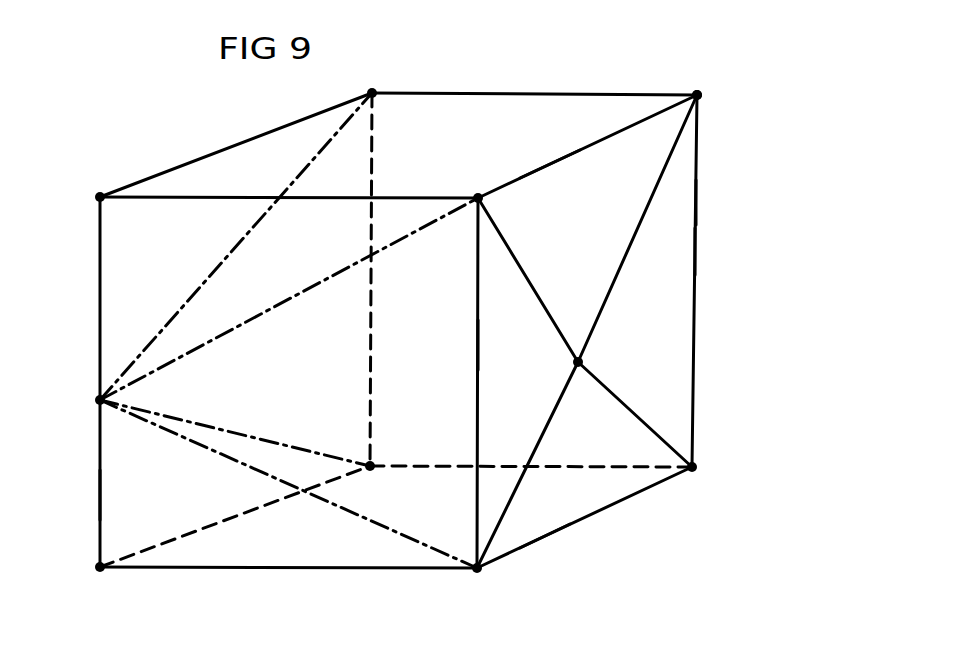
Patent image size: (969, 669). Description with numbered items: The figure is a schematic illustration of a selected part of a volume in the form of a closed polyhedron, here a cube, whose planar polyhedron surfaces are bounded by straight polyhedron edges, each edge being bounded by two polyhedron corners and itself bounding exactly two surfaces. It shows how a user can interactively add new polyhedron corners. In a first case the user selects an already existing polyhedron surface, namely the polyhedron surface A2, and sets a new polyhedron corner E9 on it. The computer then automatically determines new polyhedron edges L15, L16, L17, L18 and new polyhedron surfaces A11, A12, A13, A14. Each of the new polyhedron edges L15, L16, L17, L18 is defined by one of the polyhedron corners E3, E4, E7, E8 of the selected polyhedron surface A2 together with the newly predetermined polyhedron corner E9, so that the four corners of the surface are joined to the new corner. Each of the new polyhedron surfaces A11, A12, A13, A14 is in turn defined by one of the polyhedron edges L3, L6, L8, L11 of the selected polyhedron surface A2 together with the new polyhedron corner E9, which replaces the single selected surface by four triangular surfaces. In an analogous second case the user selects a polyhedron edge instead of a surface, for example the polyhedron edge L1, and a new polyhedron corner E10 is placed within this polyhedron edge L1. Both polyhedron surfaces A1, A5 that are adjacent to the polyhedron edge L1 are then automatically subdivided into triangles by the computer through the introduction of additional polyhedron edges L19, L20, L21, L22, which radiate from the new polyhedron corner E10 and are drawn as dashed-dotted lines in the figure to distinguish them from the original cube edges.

The polyhedron surface A5 is at (178, 130).
The polyhedron surface A1 is at (108, 490).
The polyhedron surface A2 is at (682, 203).
The new polyhedron surface A11 is at (682, 247).
The new polyhedron surface A12 is at (558, 167).
The new polyhedron surface A13 is at (490, 342).
The new polyhedron surface A14 is at (542, 535).
The polyhedron corner E3 is at (476, 197).
The polyhedron corner E4 is at (700, 97).
The polyhedron corner E7 is at (478, 571).
The polyhedron corner E8 is at (695, 469).
The new polyhedron corner E9 is at (581, 360).
The new polyhedron corner E10 is at (98, 399).
The polyhedron edge L1 is at (98, 325).
The polyhedron edge L3 is at (588, 146).
The polyhedron edge L6 is at (476, 522).
The polyhedron edge L8 is at (615, 506).
The polyhedron edge L11 is at (697, 317).
The new polyhedron edge L15 is at (510, 503).
The new polyhedron edge L16 is at (648, 420).
The new polyhedron edge L17 is at (606, 292).
The new polyhedron edge L18 is at (507, 242).
The additional polyhedron edge L19 is at (200, 293).
The additional polyhedron edge L20 is at (317, 453).
The additional polyhedron edge L21 is at (280, 306).
The additional polyhedron edge L22 is at (138, 420).